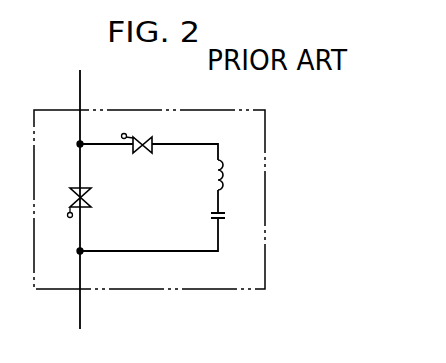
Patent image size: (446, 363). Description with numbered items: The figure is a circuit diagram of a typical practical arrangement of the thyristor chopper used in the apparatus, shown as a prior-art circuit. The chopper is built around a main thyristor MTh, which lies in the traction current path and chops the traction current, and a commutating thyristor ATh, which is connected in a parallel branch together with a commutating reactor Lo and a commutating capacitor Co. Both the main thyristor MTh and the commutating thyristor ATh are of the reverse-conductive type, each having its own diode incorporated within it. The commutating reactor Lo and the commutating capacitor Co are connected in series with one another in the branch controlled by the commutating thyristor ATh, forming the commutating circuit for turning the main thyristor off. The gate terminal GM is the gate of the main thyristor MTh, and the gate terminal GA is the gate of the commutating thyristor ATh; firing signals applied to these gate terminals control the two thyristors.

The gate terminal of commutating thyristor GA is at (121, 135).
The gate terminal of main thyristor GM is at (69, 218).
The commutating thyristor ATh is at (141, 154).
The main thyristor MTh is at (91, 195).
The commutating reactor Lo is at (223, 178).
The commutating capacitor Co is at (226, 212).